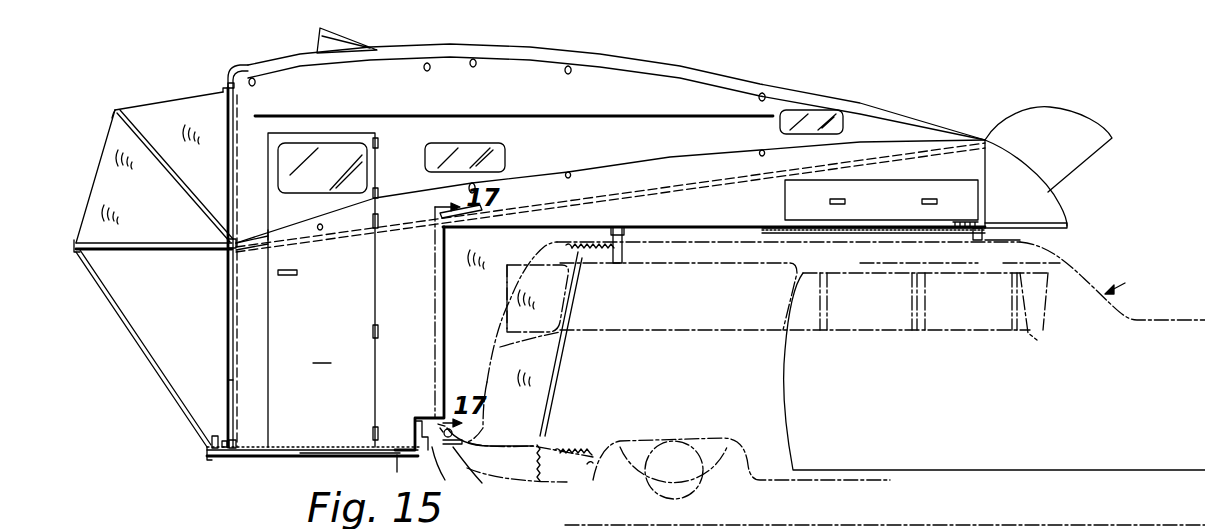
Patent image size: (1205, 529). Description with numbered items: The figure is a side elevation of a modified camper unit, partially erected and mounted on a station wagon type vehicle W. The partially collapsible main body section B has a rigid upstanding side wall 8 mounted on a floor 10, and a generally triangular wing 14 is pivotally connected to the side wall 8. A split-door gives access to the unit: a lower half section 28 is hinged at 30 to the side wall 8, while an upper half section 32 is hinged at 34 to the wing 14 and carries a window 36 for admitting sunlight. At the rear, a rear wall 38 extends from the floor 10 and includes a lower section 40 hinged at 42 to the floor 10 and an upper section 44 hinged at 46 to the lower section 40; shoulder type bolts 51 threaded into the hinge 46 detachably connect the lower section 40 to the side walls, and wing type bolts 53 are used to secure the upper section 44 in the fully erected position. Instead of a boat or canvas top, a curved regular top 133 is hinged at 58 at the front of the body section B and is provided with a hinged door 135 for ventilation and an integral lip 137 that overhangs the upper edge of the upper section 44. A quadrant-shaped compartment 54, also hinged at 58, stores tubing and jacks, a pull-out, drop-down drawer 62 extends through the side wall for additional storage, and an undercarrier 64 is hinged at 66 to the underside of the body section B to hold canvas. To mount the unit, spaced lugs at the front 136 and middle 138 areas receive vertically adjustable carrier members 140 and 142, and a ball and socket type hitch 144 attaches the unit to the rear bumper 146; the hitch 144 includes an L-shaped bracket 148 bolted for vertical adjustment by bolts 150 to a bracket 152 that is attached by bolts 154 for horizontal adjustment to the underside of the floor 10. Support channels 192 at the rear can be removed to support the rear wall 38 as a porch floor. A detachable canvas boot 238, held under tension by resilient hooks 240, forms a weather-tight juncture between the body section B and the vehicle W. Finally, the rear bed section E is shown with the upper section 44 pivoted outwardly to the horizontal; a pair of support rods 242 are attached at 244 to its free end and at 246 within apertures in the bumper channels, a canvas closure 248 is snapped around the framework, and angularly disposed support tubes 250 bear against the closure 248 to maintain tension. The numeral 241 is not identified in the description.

The side wall 8 is at (862, 137).
The floor 10 is at (297, 452).
The wing 14 is at (590, 92).
The lower half section 28 is at (360, 395).
The hinge 30 is at (380, 332).
The upper half section 32 is at (268, 226).
The hinge 34 is at (378, 193).
The window 36 is at (283, 185).
The rear wall 38 is at (227, 385).
The lower section 40 is at (227, 318).
The hinge 42 is at (236, 443).
The upper section 44 is at (140, 251).
The hinge 46 is at (228, 242).
The shoulder type bolts 51 is at (229, 252).
The wing type bolts 53 is at (238, 80).
The compartment 54 is at (1080, 113).
The hinge 58 is at (985, 140).
The drawer 62 is at (785, 203).
The undercarrier 64 is at (1046, 233).
The hinge 66 is at (1068, 226).
The regular top 133 is at (503, 51).
The hinged door 135 is at (378, 42).
The front lugs 136 is at (985, 225).
The integral lip 137 is at (228, 78).
The middle lugs 138 is at (630, 227).
The carrier member 140 is at (973, 232).
The carrier member 142 is at (622, 249).
The ball and socket type hitch 144 is at (456, 428).
The rear bumper 146 is at (460, 448).
The L-shaped bracket 148 is at (465, 468).
The bolts 150 is at (445, 478).
The bracket 152 is at (357, 459).
The bolts 154 is at (397, 458).
The support channels 192 is at (185, 433).
The canvas boot 238 is at (556, 367).
The resilient hooks 240 is at (567, 447).
The tent attachment 241 is at (222, 89).
The support rods 242 is at (117, 312).
The attachment point 244 is at (76, 253).
The apertures 246 is at (210, 458).
The canvas closure 248 is at (98, 193).
The support tubes 250 is at (118, 135).
The rear bed section E is at (113, 95).
The main body section B is at (322, 352).
The station wagon type vehicle W is at (1124, 278).